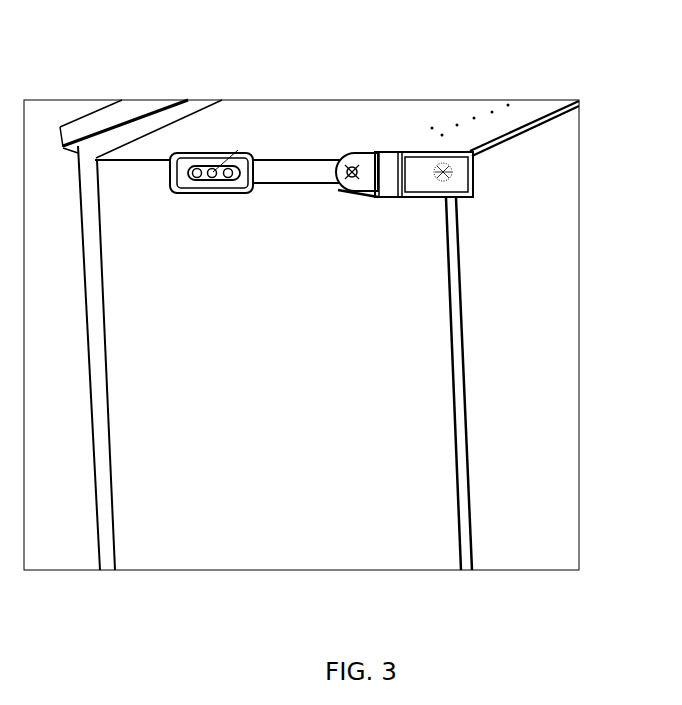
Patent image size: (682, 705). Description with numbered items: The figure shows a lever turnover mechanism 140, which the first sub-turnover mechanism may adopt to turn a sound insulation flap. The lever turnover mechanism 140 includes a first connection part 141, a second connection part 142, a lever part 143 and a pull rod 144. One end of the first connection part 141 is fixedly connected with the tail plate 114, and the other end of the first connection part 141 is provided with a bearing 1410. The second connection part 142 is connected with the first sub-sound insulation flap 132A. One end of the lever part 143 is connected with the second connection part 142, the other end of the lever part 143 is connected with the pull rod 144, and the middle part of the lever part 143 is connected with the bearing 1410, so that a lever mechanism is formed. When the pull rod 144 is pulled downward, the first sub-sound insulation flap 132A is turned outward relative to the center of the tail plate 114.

The lever turnover mechanism 140 is at (368, 609).
The first sub-sound insulation flap 132A is at (147, 123).
The second connection part 142 is at (193, 157).
The lever part 143 is at (303, 168).
The bearing 1410 is at (357, 163).
The first connection part 141 is at (460, 163).
The tail plate 114 is at (547, 167).
The pull rod 144 is at (462, 423).